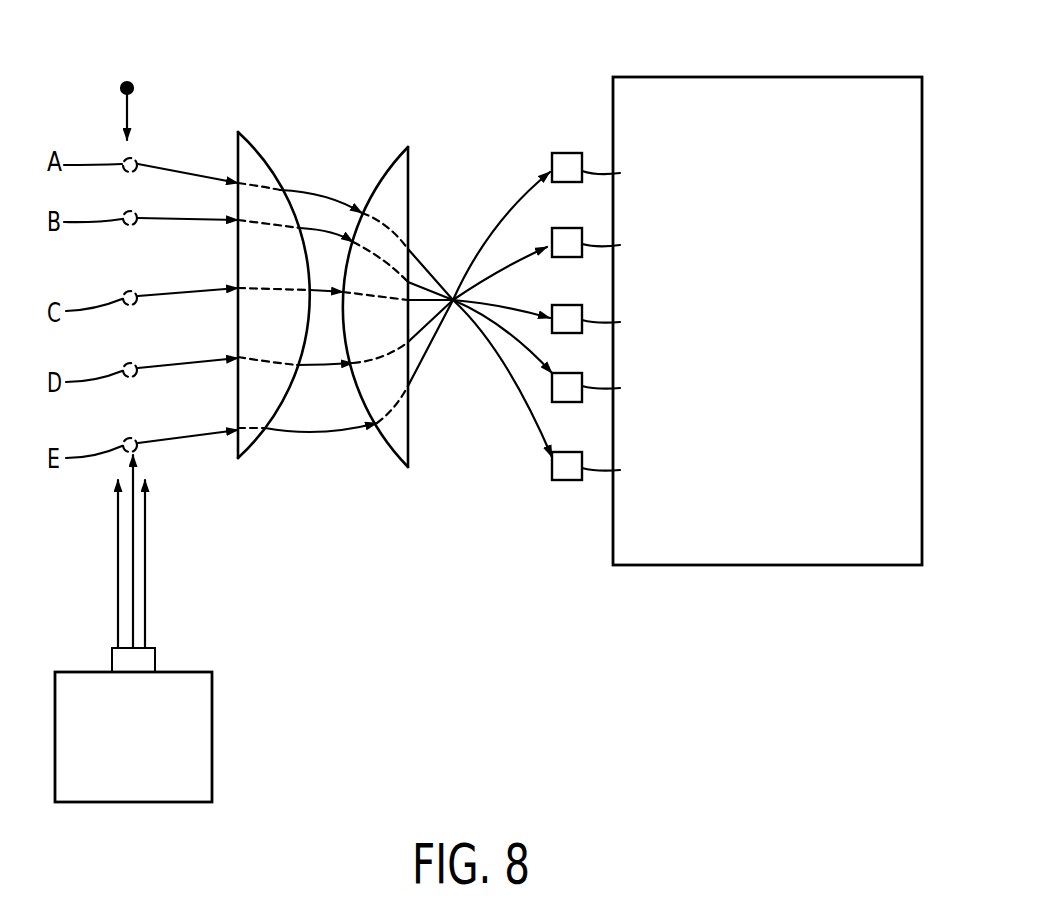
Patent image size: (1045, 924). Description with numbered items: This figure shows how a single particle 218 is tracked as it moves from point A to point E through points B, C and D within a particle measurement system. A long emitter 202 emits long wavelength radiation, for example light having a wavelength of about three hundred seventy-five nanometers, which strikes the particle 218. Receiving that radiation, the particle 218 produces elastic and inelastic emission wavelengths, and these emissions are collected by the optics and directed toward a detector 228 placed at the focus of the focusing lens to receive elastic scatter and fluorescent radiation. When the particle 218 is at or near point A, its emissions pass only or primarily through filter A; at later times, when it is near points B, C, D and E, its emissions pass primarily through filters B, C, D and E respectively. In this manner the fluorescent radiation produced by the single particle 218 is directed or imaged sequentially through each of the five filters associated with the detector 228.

The long emitter 202 is at (212, 723).
The particle 218 is at (129, 82).
The detector 228 is at (760, 76).